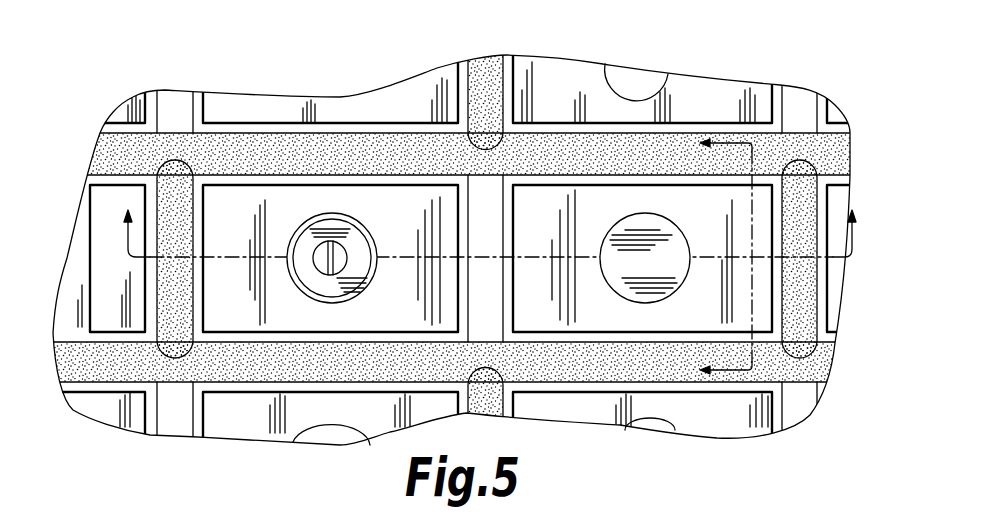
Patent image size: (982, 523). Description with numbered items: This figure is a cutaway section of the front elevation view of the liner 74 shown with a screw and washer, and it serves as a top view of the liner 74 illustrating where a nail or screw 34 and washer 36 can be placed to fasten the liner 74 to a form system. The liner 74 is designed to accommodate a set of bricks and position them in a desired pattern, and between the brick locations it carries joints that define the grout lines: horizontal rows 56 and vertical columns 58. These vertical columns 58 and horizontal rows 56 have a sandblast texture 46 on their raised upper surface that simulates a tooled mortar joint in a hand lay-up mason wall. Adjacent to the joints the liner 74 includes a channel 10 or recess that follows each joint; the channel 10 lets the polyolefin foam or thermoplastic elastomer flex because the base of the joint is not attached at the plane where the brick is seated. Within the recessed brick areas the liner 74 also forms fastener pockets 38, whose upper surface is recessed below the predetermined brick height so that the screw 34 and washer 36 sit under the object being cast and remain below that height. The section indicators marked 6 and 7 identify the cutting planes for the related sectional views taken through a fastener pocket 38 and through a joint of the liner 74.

The channel 10 is at (483, 245).
The screw 34 is at (335, 250).
The washer 36 is at (353, 242).
The fastener pocket 38 is at (648, 230).
The sandblast texture 46 is at (455, 362).
The horizontal row 56 is at (537, 152).
The vertical column 58 is at (177, 190).
The liner 74 is at (560, 50).
The section line 6- 6 is at (739, 246).
The section line 7- 7 is at (493, 215).